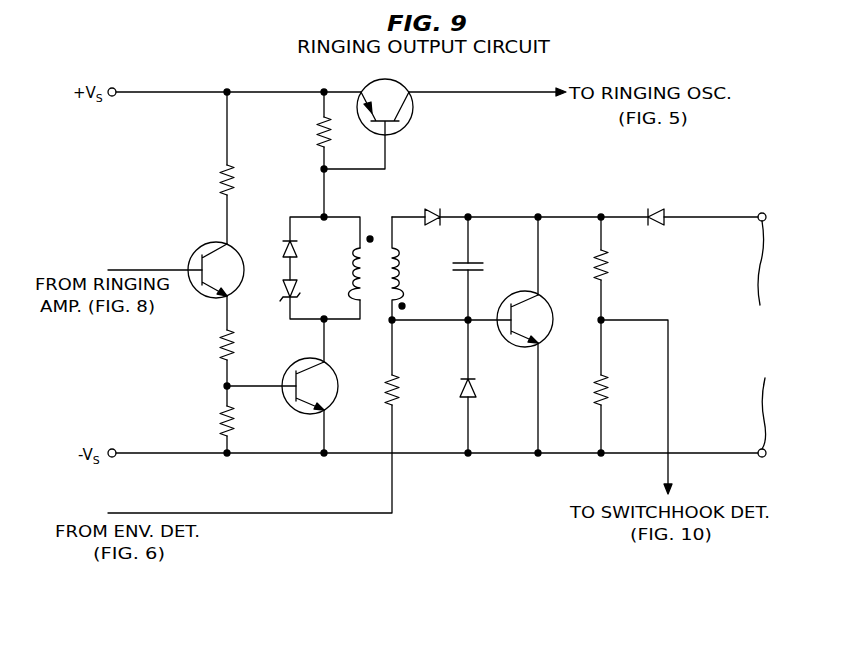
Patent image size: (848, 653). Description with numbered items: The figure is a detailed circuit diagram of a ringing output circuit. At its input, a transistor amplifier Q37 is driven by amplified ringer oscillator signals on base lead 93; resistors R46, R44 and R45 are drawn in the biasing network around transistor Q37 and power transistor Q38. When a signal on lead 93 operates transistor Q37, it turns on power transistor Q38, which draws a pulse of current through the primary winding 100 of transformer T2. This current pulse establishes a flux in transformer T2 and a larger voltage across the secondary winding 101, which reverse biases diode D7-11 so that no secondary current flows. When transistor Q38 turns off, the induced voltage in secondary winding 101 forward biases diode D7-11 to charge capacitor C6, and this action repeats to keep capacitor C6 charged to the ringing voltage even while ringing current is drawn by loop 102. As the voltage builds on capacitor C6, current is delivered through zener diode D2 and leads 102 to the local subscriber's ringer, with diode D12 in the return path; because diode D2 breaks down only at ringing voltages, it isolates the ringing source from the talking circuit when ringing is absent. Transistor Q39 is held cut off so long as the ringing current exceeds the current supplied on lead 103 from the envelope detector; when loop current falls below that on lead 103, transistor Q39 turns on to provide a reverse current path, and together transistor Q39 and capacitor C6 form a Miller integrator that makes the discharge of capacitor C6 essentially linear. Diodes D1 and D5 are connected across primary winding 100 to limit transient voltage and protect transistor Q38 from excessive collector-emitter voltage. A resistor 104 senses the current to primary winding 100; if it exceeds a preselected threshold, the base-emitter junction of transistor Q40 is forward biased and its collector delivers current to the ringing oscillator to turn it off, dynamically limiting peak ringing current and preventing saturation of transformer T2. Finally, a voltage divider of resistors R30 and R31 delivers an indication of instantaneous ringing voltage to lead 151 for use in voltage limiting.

The base lead 93 is at (149, 266).
The primary winding 100 is at (369, 308).
The secondary winding 101 is at (401, 282).
The loop 102 is at (767, 335).
The lead 103 is at (345, 516).
The resistor 104 is at (317, 131).
The lead 151 is at (660, 470).
The resistor R46 is at (207, 180).
The resistor R44 is at (215, 353).
The resistor R45 is at (217, 419).
The resistor R30 is at (611, 260).
The resistor R31 is at (612, 392).
The transistor amplifier Q37 is at (238, 242).
The power transistor Q38 is at (336, 397).
The transistor Q39 is at (551, 322).
The transistor Q40 is at (414, 108).
The diode D1 is at (300, 288).
The diode D5 is at (298, 247).
The zener diode D2 is at (651, 209).
The diode D7-11 is at (437, 212).
The diode D12 is at (478, 392).
The capacitor C6 is at (489, 265).
The transformer T2 is at (395, 271).